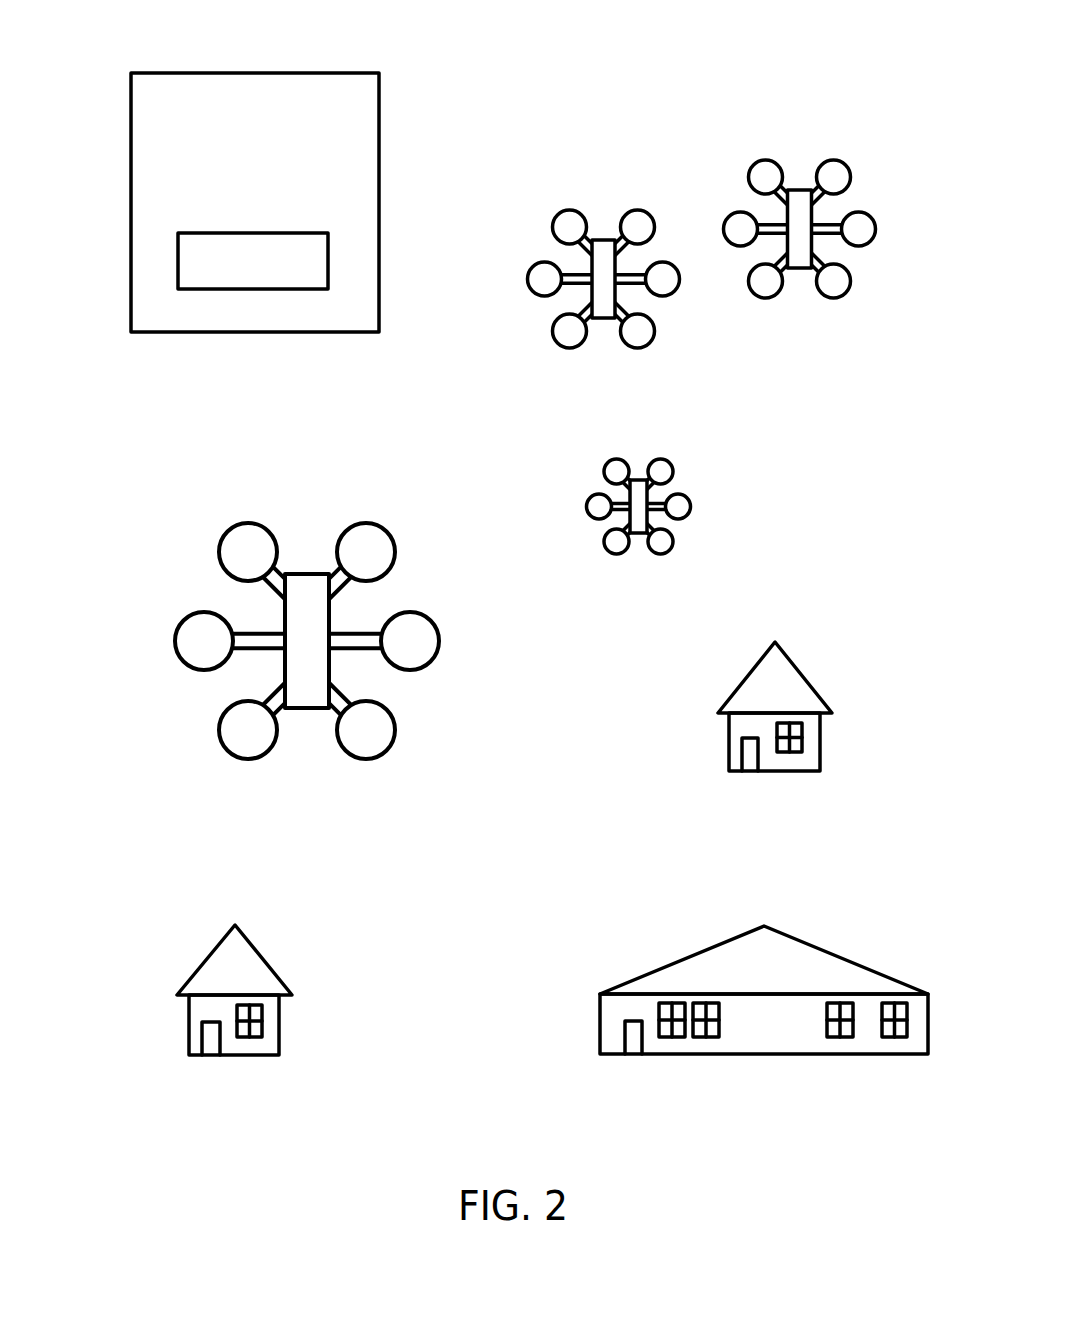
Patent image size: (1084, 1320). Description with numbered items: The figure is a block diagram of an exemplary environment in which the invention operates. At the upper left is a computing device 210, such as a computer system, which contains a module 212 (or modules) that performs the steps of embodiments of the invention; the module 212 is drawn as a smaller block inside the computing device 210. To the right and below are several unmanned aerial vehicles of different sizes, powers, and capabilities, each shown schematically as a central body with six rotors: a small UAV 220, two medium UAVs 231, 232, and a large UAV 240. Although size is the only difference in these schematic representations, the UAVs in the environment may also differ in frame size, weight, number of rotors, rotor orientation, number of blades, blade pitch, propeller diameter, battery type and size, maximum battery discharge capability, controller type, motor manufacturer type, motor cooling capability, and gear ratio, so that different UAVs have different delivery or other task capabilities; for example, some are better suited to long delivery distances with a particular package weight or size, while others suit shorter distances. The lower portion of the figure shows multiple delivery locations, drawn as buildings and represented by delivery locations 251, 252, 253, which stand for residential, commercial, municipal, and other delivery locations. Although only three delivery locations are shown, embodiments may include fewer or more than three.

The computing device 210 is at (379, 95).
The module 212 is at (210, 290).
The small UAV 220 is at (684, 494).
The medium UAV 231 is at (582, 209).
The medium UAV 232 is at (842, 159).
The large UAV 240 is at (407, 609).
The delivery location 251 is at (263, 958).
The delivery location 252 is at (803, 677).
The delivery location 253 is at (812, 945).